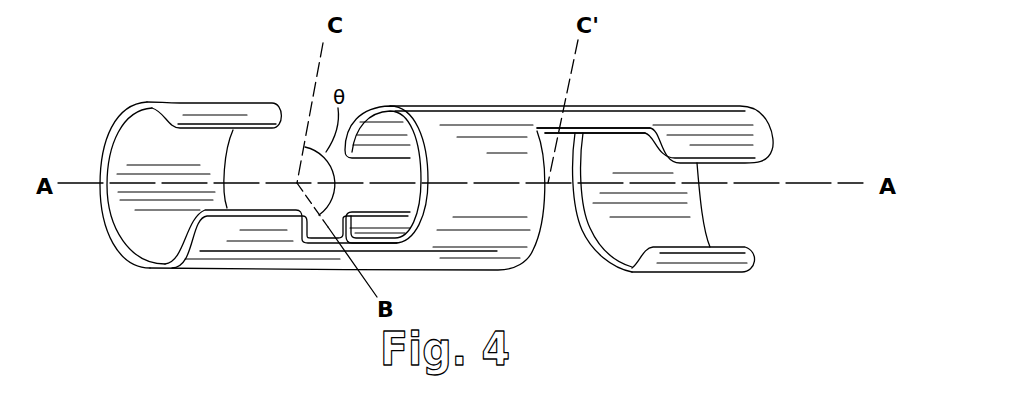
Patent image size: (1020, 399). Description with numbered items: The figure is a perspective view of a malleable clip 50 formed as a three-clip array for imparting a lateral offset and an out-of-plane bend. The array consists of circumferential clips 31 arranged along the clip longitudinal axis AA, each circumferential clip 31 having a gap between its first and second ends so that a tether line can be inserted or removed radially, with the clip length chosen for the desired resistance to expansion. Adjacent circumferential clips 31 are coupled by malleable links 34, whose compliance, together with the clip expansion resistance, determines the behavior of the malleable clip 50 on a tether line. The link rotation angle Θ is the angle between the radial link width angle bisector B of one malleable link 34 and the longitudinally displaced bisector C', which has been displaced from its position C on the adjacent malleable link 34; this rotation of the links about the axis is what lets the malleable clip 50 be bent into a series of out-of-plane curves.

The circumferential clip 31 is at (115, 91).
The malleable link 34 is at (593, 147).
The malleable clip 50 is at (415, 182).